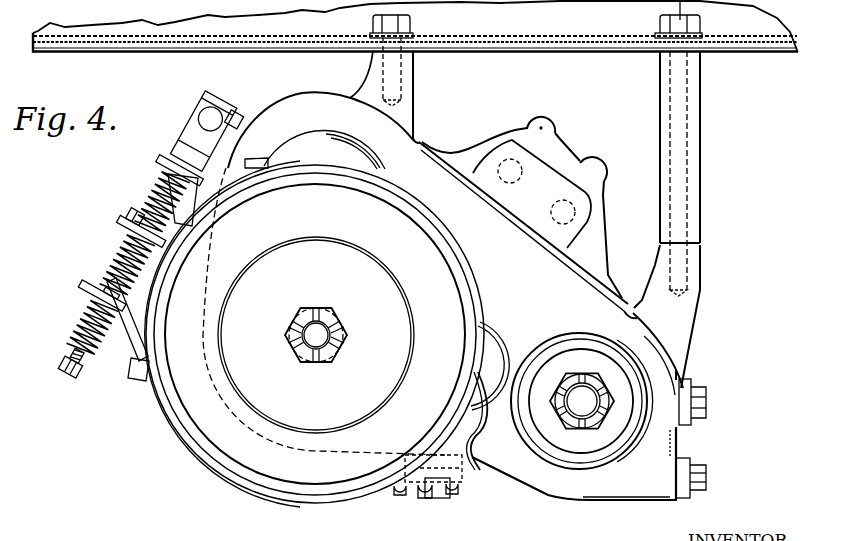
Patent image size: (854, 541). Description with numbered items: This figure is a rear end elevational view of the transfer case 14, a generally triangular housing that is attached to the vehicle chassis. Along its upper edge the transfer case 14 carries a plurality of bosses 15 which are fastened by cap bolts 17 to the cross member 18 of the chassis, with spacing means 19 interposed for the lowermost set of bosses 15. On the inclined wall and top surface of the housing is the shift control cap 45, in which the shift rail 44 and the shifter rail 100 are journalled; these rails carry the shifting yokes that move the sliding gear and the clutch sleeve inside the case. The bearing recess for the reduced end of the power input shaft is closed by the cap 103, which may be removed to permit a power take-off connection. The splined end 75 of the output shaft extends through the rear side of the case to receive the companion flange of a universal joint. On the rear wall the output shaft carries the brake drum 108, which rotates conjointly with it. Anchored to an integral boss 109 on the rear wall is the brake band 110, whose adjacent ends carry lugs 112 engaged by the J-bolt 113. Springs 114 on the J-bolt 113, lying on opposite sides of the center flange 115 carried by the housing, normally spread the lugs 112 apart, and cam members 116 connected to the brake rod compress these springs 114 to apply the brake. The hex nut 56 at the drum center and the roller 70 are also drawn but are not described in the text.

The transfer case 14 is at (288, 96).
The bosses 15 is at (414, 70).
The cap bolts 17 is at (407, 26).
The cross member 18 is at (570, 34).
The spacing means 19 is at (693, 121).
The shift rail 44 is at (518, 163).
The shift control cap 45 is at (478, 148).
The shaft nut 56 is at (333, 315).
The roller 70 is at (493, 345).
The splined end 75 is at (580, 410).
The shifter rail 100 is at (575, 213).
The cap 103 is at (332, 147).
The brake drum 108 is at (173, 393).
The integral boss 109 is at (432, 482).
The brake band 110 is at (267, 508).
The lugs 112 is at (177, 163).
The J-bolt 113 is at (62, 353).
The springs 114 is at (117, 252).
The center flange 115 is at (122, 223).
The cam members 116 is at (196, 122).